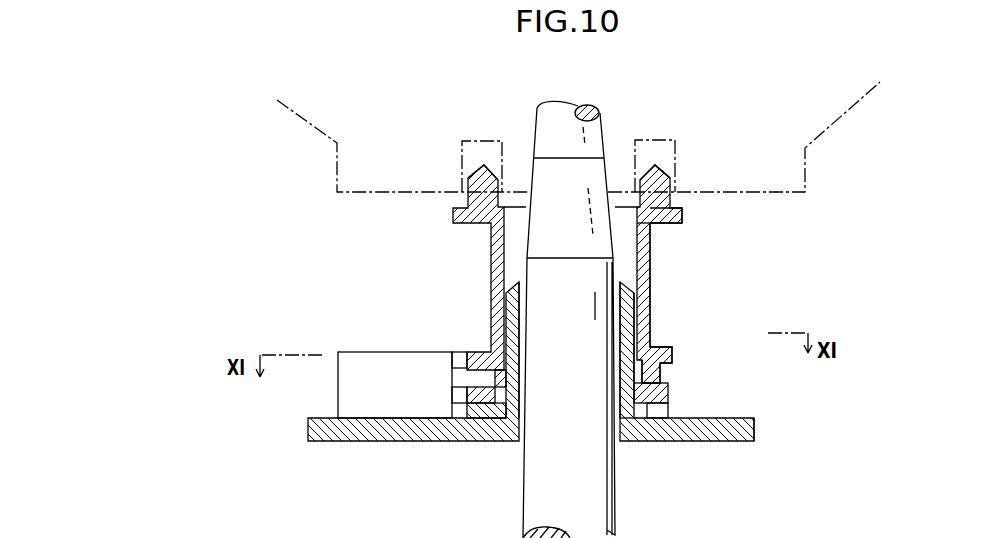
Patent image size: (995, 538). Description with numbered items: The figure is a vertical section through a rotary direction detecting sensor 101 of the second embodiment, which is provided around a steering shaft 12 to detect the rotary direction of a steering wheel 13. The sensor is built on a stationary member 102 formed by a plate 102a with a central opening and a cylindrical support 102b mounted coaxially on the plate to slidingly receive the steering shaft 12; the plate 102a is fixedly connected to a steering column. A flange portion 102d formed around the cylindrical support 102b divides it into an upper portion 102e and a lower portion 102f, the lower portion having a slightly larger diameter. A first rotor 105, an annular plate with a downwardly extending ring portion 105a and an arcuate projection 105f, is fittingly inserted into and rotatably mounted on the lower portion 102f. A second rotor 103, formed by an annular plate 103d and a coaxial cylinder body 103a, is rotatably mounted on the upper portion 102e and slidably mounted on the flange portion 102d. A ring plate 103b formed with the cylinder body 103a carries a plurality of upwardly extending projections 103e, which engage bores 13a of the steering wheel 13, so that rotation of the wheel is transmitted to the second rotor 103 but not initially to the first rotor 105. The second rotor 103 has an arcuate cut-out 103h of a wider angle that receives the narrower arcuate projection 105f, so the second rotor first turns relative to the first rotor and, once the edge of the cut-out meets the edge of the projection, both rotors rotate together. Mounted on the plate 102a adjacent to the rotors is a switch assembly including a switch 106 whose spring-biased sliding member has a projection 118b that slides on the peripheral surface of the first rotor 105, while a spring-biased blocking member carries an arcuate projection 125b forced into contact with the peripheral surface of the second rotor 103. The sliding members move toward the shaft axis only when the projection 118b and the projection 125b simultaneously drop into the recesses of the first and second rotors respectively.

The steering shaft 12 is at (615, 513).
The steering wheel 13 is at (805, 157).
The bores of the steering wheel 13a is at (668, 140).
The rotary direction detecting sensor 101 is at (672, 238).
The stationary member 102 is at (747, 450).
The plate 102a is at (755, 428).
The cylindrical support 102b is at (627, 307).
The flange portion 102d is at (473, 388).
The upper portion of the cylindrical support 102e is at (645, 337).
The lower portion of the cylindrical support 102f is at (650, 428).
The second rotor 103 is at (487, 258).
The cylinder body 103a is at (650, 258).
The ring plate 103b is at (683, 213).
The annular plate of the second rotor 103d is at (668, 358).
The projections of the ring plate 103e is at (672, 175).
The arcuate cut-out 103h is at (658, 378).
The first rotor 105 is at (662, 408).
The ring portion 105a is at (495, 405).
The arcuate projection 105f is at (668, 386).
The switch 106 is at (352, 352).
The projection of the sliding member 118b is at (452, 393).
The projection of the blocking member 125b is at (462, 350).